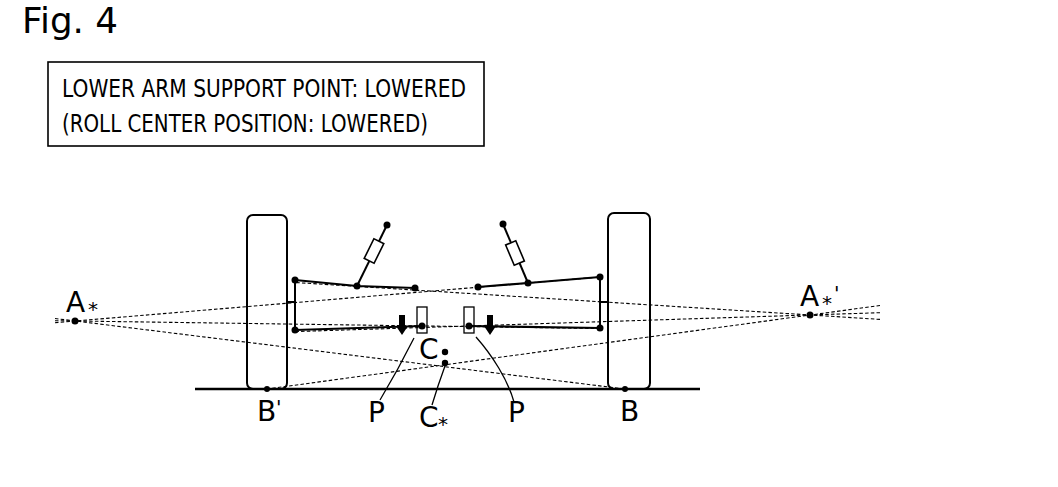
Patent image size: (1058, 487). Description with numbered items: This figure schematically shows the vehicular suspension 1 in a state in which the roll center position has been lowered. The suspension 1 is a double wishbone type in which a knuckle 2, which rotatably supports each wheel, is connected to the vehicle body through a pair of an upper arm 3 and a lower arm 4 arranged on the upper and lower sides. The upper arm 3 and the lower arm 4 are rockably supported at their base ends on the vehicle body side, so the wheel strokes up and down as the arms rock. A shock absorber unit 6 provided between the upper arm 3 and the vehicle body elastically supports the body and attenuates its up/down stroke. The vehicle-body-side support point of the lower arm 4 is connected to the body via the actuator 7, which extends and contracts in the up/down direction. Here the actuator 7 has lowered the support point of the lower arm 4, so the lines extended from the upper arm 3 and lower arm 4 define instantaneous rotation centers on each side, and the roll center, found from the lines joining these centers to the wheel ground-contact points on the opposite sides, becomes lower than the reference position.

The suspension 1 is at (650, 287).
The knuckle 2 is at (602, 288).
The upper arm 3 is at (565, 280).
The lower arm 4 is at (578, 330).
The shock absorber unit 6 is at (508, 246).
The actuator 7 is at (468, 340).